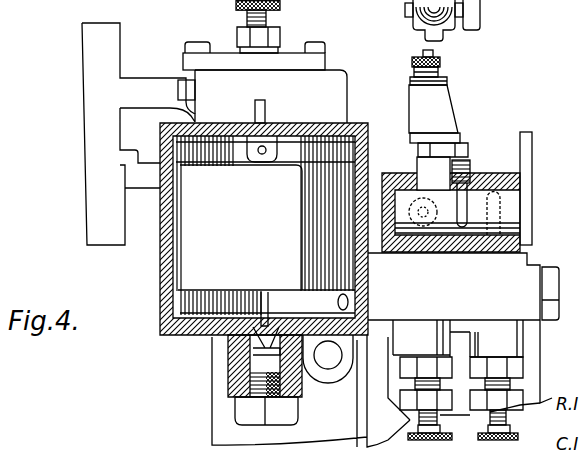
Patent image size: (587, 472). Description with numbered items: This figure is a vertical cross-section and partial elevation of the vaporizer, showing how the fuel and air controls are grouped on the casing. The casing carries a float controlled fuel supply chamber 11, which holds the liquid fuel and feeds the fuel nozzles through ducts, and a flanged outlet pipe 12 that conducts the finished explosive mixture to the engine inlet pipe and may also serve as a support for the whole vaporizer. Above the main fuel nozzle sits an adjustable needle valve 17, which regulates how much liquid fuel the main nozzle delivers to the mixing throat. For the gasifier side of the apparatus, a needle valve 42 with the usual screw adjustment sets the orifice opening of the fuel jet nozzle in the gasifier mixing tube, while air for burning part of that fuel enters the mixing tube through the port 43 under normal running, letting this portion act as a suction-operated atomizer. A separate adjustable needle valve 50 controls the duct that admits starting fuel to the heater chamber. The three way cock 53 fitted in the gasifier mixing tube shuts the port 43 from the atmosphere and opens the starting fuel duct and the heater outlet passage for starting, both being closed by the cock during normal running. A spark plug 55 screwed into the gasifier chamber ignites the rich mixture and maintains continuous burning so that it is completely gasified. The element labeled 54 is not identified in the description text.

The float controlled fuel supply chamber 11 is at (165, 272).
The flanged outlet pipe 12 is at (92, 159).
The adjustable needle valve 17 is at (268, 24).
The needle valve 42 is at (435, 433).
The port 43 is at (421, 175).
The adjustable needle valve 50 is at (492, 433).
The three way cock 53 is at (507, 202).
The plate 54 is at (532, 147).
The spark plug 55 is at (440, 115).